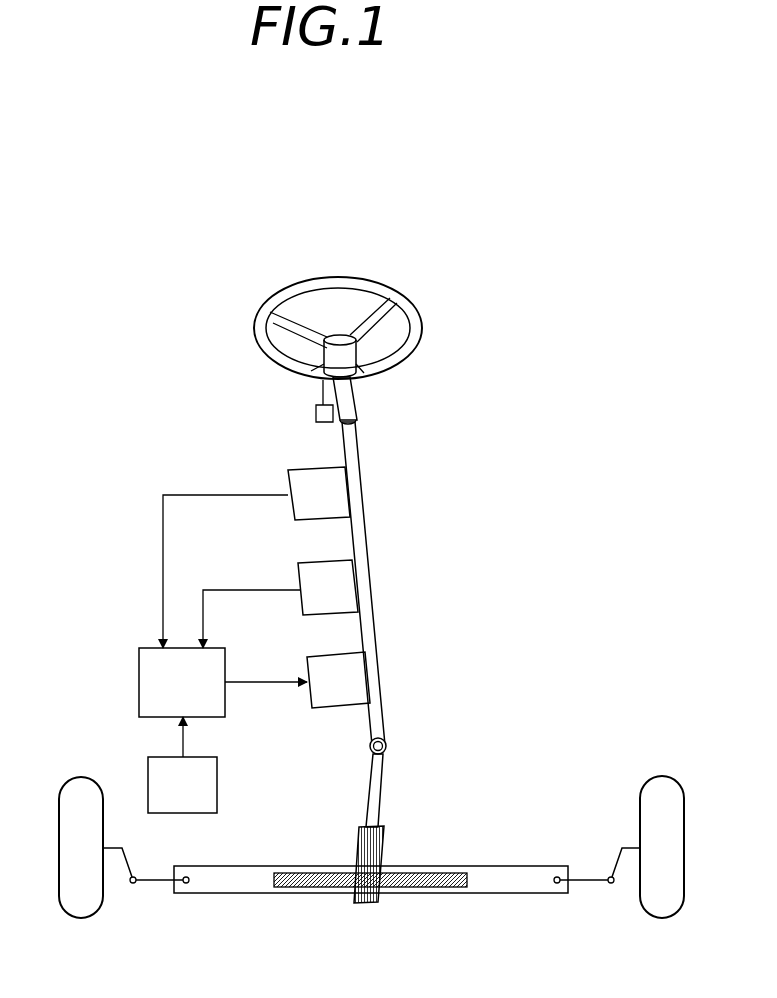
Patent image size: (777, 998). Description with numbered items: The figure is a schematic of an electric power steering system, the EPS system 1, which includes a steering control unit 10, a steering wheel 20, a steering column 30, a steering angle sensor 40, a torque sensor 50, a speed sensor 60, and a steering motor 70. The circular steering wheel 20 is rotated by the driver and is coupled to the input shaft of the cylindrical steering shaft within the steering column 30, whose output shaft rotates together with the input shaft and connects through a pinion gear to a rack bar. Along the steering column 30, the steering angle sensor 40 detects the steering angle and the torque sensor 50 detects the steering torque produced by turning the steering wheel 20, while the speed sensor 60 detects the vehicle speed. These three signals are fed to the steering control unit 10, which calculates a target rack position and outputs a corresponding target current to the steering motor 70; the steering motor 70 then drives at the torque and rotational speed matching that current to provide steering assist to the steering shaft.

The EPS system 1 is at (157, 253).
The steering control unit 10 is at (139, 680).
The steering wheel 20 is at (333, 282).
The steering column 30 is at (353, 481).
The steering angle sensor 40 is at (303, 477).
The torque sensor 50 is at (343, 584).
The speed sensor 60 is at (148, 787).
The steering motor 70 is at (350, 678).